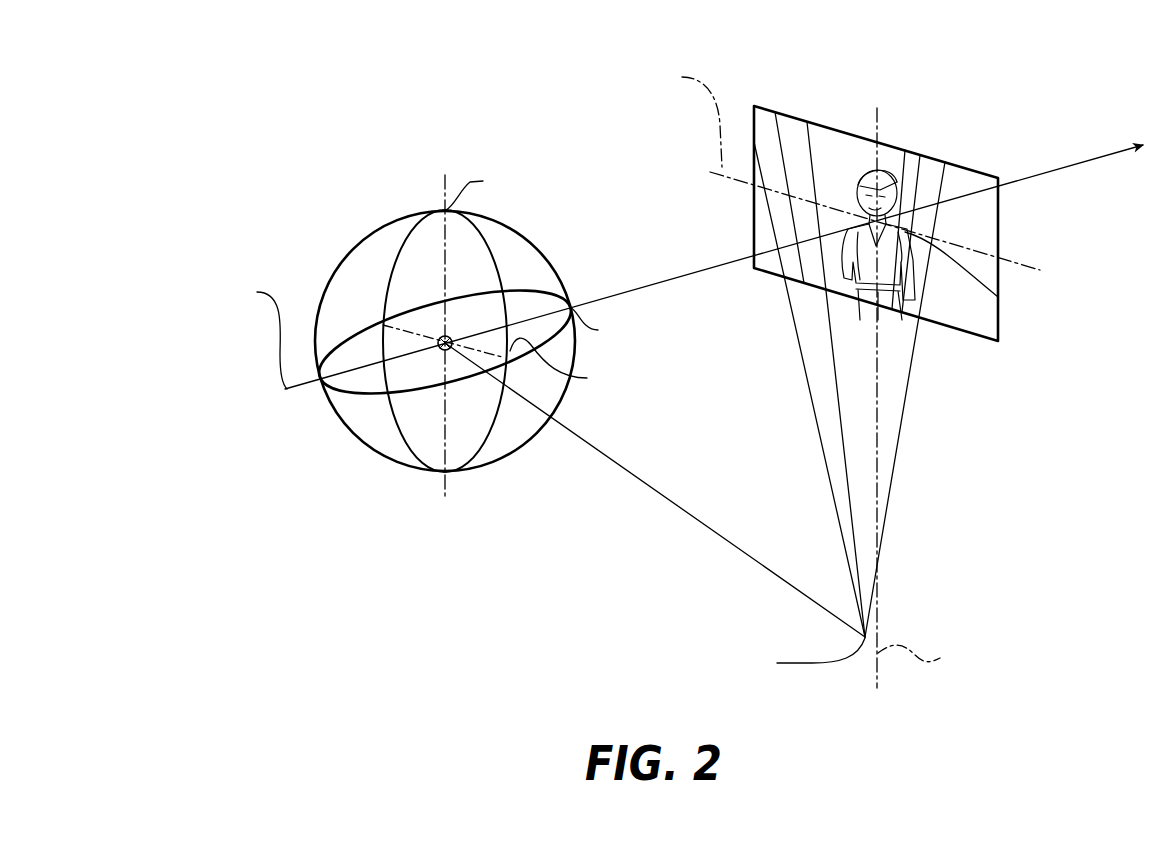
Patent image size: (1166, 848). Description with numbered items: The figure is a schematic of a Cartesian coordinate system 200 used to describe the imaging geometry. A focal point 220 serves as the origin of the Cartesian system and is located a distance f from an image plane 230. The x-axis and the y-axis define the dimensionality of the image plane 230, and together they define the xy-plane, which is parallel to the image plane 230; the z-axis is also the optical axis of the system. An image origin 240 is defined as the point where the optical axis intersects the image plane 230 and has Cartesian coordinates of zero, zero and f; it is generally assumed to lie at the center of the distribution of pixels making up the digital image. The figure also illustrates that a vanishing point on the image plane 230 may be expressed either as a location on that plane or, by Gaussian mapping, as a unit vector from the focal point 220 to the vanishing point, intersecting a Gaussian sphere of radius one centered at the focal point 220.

The Cartesian coordinate system 200 is at (641, 369).
The focal point 220 is at (442, 349).
The image plane 230 is at (967, 193).
The image origin 240 is at (998, 297).